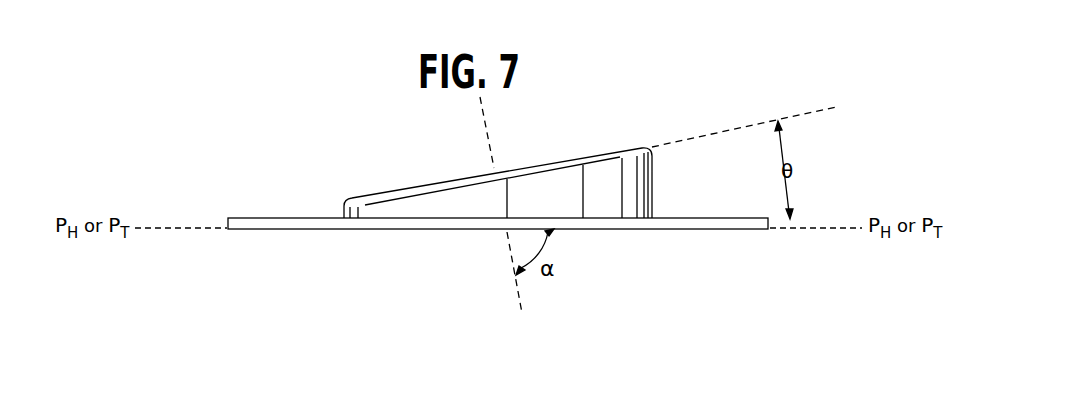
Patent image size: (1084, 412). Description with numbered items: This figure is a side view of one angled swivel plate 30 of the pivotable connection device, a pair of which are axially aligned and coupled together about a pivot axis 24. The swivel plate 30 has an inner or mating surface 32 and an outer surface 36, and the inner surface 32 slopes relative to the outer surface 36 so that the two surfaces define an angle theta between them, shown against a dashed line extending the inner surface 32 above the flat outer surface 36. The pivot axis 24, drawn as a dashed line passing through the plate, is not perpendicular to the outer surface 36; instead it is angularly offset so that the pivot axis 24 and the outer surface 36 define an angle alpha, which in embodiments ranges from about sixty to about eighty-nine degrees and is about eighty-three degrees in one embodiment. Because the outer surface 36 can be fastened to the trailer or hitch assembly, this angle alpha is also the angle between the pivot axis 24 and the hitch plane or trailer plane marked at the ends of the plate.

The angled swivel plate 30 is at (368, 146).
The inner surface 32 is at (514, 168).
The outer surface 36 is at (713, 230).
The pivot axis 24 is at (482, 227).